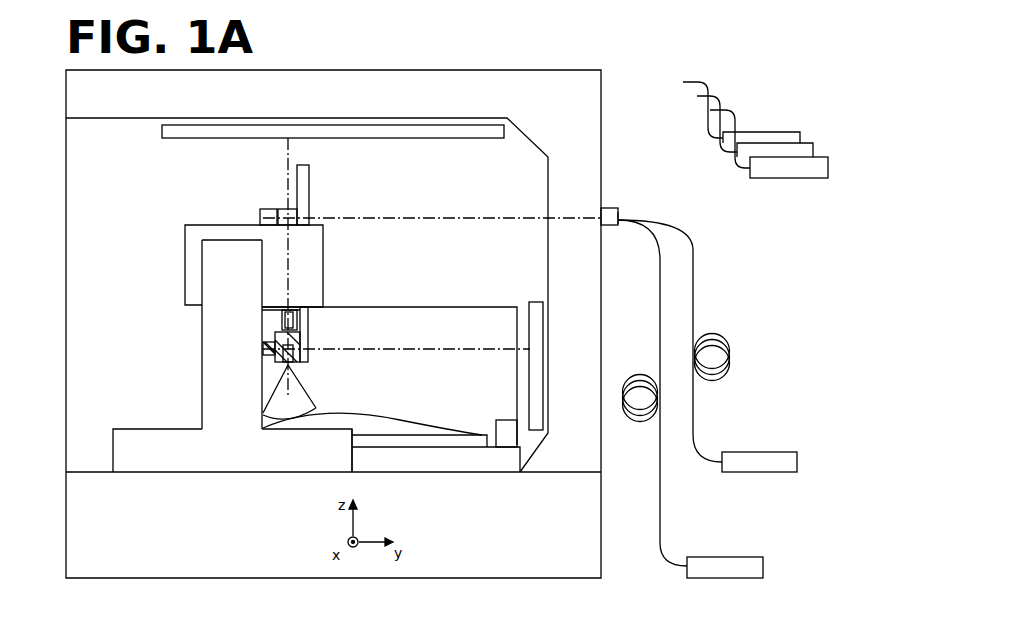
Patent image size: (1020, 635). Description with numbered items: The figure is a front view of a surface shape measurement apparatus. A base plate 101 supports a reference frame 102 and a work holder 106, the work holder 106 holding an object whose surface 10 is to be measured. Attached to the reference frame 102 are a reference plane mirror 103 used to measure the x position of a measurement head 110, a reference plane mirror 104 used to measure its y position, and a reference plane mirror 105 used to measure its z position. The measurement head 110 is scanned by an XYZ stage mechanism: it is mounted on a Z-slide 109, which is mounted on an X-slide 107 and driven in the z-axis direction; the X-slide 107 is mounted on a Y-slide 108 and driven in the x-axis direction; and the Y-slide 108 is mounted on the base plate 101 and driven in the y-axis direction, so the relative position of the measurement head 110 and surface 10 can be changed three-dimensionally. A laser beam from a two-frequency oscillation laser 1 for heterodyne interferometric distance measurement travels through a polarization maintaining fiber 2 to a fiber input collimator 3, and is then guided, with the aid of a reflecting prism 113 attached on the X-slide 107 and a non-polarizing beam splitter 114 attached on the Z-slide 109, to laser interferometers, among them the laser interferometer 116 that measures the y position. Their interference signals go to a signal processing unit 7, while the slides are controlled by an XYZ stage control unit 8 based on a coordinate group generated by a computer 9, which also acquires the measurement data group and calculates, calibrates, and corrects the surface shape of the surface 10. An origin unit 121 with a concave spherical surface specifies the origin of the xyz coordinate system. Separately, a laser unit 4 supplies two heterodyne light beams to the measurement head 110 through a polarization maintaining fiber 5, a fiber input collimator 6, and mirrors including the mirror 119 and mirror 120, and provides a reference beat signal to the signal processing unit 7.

The 2-frequency oscillation laser 1 is at (726, 565).
The polarization maintaining fiber 2 is at (662, 273).
The fiber input collimator 3 is at (622, 211).
The laser unit 4 is at (757, 458).
The polarization maintaining fiber 5 is at (695, 300).
The fiber input collimator 6 is at (610, 208).
The signal processing unit 7 is at (755, 137).
The XYZ stage control unit 8 is at (785, 150).
The computer 9 is at (818, 165).
The surface to be measured 10 is at (380, 425).
The base plate 101 is at (558, 545).
The reference frame 102 is at (560, 87).
The reference plane mirror 103 is at (465, 325).
The reference plane mirror 104 is at (535, 318).
The reference plane mirror 105 is at (420, 130).
The work holder 106 is at (427, 458).
The X-slide 107 is at (195, 234).
The Y-slide 108 is at (218, 412).
The Z-slide 109 is at (310, 186).
The measurement head 110 is at (282, 330).
The reflecting prism 113 is at (283, 209).
The non-polarizing beam splitter 114 is at (298, 322).
The laser interferometer 116 is at (275, 362).
The mirror 119 is at (260, 210).
The mirror 120 is at (270, 350).
The origin unit 121 is at (507, 435).